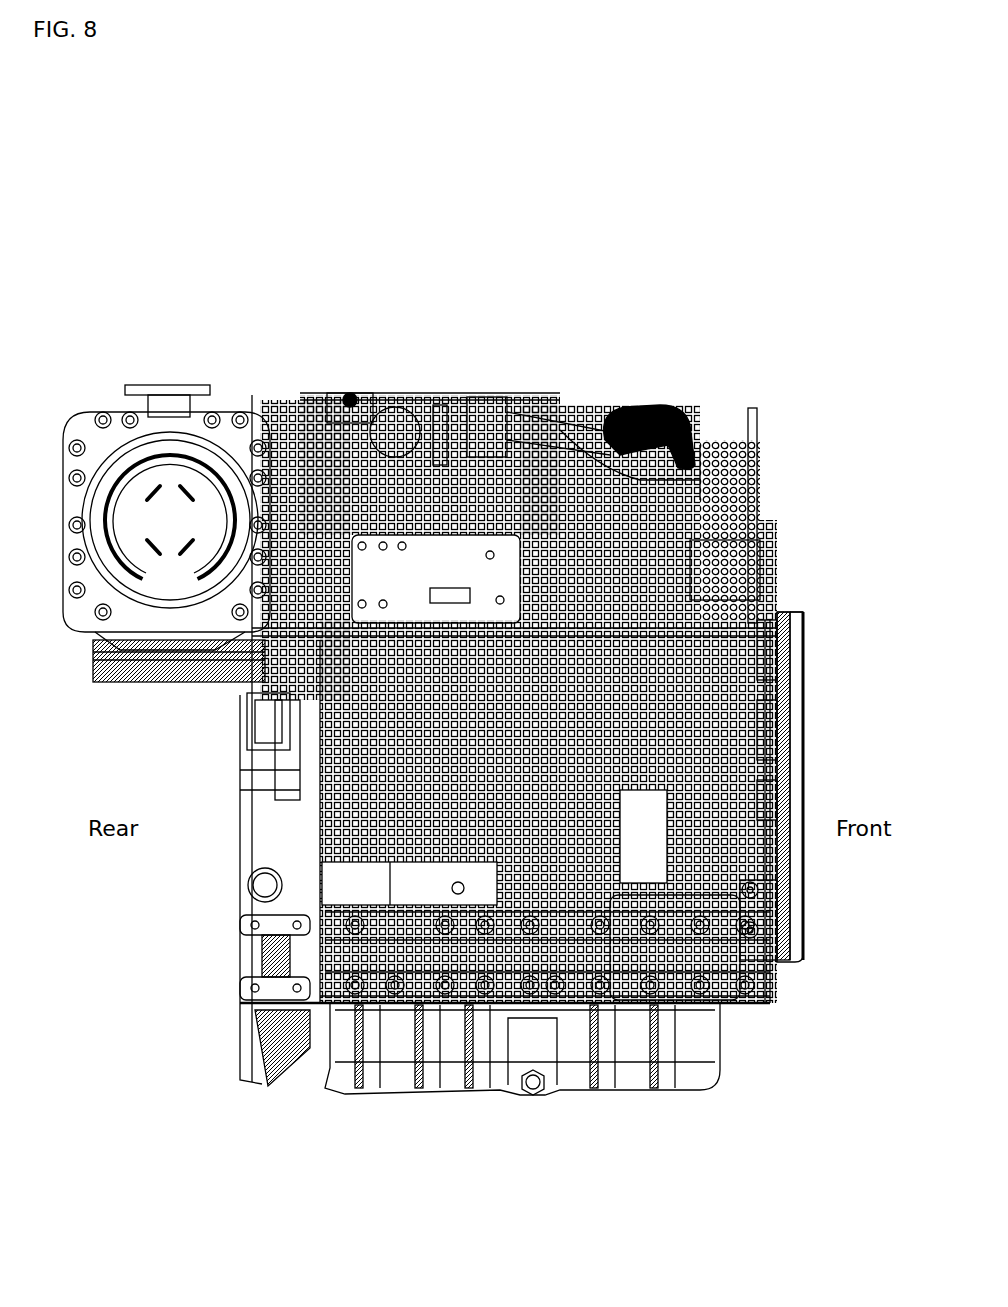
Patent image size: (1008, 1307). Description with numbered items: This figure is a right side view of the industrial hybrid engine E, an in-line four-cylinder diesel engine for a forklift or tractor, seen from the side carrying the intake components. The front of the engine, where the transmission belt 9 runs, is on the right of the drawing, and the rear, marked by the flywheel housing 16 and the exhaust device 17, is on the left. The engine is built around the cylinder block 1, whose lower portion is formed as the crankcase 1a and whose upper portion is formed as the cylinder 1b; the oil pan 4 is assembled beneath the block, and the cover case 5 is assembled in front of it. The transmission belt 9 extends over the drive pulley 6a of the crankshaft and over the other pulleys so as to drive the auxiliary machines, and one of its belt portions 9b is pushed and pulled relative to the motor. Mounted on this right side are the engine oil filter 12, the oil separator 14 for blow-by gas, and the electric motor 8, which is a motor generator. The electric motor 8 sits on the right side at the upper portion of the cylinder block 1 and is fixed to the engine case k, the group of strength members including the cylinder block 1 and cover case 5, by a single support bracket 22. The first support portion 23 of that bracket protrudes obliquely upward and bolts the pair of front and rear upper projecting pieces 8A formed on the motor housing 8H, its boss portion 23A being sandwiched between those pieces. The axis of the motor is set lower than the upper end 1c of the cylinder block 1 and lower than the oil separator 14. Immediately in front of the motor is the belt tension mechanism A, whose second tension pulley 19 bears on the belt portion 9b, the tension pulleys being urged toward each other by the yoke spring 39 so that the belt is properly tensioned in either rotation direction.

The cylinder block 1 is at (620, 1013).
The crankcase 1a is at (492, 1005).
The cylinder 1b is at (305, 948).
The upper end 1c is at (503, 607).
The oil pan 4 is at (428, 1073).
The cover case 5 is at (755, 912).
The drive pulley 6a is at (805, 945).
The electric motor 8 is at (668, 514).
The upper projecting pieces 8A is at (693, 440).
The motor housing 8H is at (770, 615).
The transmission belt 9 is at (787, 953).
The transmission belt portion 9b is at (805, 805).
The engine oil filter 12 is at (733, 1000).
The oil separator 14 is at (516, 400).
The flywheel housing 16 is at (247, 838).
The exhaust device 17 is at (236, 425).
The second tension pulley 19 is at (805, 745).
The support bracket 22 is at (647, 368).
The first support portion 23 is at (687, 384).
The boss portion 23A is at (706, 440).
The yoke spring 39 is at (797, 640).
The belt tension mechanism A is at (823, 652).
The industrial hybrid engine E is at (590, 368).
The engine case k is at (822, 786).